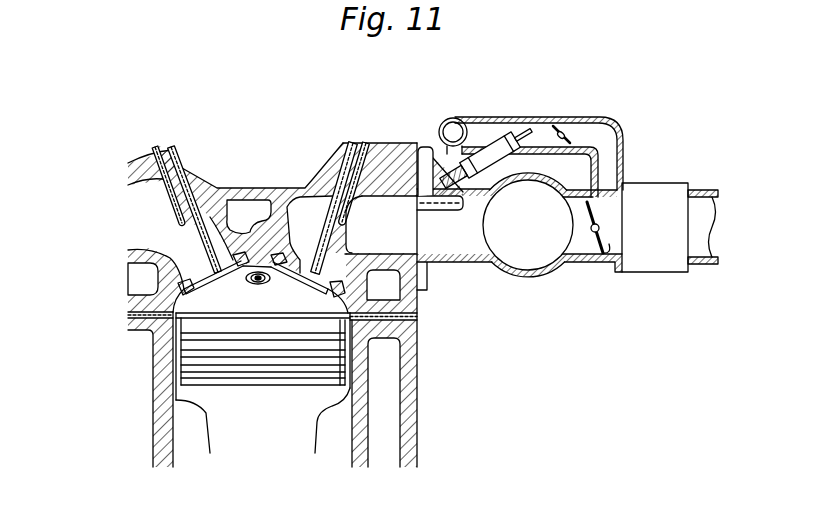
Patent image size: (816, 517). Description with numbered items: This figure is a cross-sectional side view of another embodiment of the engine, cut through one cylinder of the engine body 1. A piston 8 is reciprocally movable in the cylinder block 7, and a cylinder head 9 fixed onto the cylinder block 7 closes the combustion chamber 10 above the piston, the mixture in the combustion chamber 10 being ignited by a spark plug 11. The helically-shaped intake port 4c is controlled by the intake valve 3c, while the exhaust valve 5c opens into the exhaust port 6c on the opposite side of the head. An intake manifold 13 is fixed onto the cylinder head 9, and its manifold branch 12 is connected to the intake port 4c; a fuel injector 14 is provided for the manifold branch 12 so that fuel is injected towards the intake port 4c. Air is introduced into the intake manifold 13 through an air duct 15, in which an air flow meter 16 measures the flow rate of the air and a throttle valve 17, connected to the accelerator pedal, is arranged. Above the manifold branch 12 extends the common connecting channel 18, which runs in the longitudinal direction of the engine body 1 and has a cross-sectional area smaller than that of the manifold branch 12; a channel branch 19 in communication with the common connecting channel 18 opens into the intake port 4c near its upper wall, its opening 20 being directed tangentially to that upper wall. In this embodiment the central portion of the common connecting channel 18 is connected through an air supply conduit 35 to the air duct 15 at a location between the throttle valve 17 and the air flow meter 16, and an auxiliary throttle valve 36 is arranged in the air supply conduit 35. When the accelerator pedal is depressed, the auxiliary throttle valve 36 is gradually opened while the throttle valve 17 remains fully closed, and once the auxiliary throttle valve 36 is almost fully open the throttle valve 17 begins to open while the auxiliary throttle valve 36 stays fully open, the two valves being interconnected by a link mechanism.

The engine body 1 is at (423, 333).
The intake valve 3c is at (300, 197).
The intake port 4c is at (391, 235).
The exhaust valve 5c is at (210, 227).
The exhaust port 6c is at (154, 247).
The cylinder block 7 is at (410, 446).
The piston 8 is at (320, 414).
The cylinder head 9 is at (323, 173).
The combustion chamber 10 is at (297, 302).
The spark plug 11 is at (252, 283).
The manifold branch 12 is at (452, 265).
The intake manifold 13 is at (537, 281).
The fuel injector 14 is at (488, 140).
The air duct 15 is at (582, 268).
The air flow meter 16 is at (659, 260).
The throttle valve 17 is at (606, 272).
The common connecting channel 18 is at (456, 118).
The channel branch 19 is at (433, 190).
The opening 20 is at (420, 165).
The air supply conduit 35 is at (527, 127).
The auxiliary throttle valve 36 is at (575, 127).